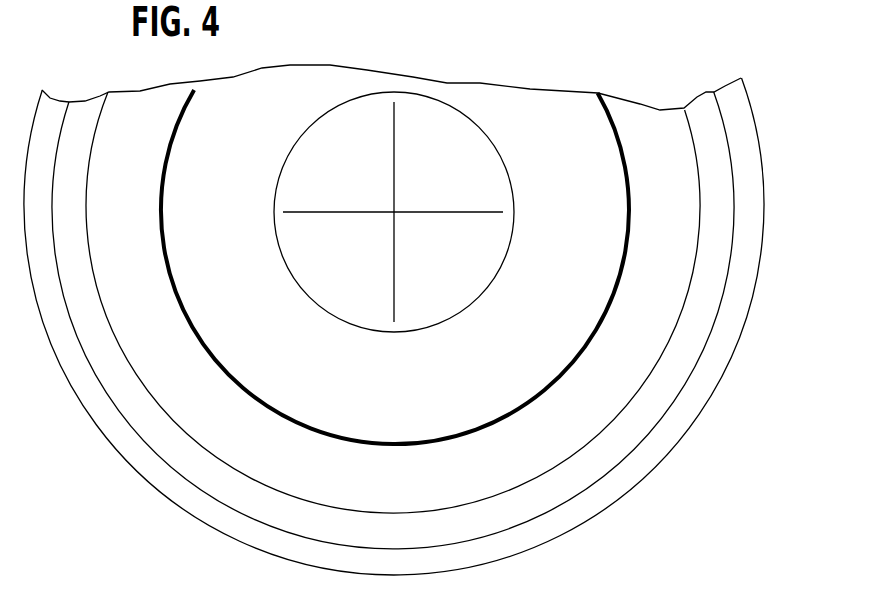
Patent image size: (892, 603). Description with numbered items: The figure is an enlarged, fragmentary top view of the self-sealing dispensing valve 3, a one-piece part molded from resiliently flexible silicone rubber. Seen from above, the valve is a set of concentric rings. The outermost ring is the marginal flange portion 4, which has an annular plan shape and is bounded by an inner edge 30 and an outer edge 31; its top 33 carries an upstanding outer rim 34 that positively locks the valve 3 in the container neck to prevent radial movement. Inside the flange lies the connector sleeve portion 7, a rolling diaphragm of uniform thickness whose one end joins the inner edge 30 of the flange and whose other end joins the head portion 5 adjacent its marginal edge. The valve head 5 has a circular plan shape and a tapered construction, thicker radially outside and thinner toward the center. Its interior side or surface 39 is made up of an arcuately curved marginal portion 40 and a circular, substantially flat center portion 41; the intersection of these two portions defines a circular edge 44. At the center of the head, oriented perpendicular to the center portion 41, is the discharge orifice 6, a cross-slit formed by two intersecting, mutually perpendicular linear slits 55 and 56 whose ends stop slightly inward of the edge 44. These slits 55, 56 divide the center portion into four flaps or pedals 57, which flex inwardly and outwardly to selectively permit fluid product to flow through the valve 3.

The self-sealing dispensing valve 3 is at (654, 107).
The marginal flange portion 4 is at (627, 493).
The head portion 5 is at (248, 332).
The discharge orifice 6 is at (395, 212).
The connector sleeve portion 7 is at (492, 428).
The inner edge 30 is at (688, 290).
The outer edge 31 is at (678, 447).
The top 33 is at (718, 265).
The outer rim 34 is at (718, 350).
The interior side or surface 39 is at (178, 249).
The marginal portion 40 is at (547, 370).
The center portion 41 is at (492, 255).
The circular edge 44 is at (367, 328).
The linear slit 55 is at (362, 212).
The linear slit 56 is at (395, 268).
The flaps or pedals 57 is at (453, 135).